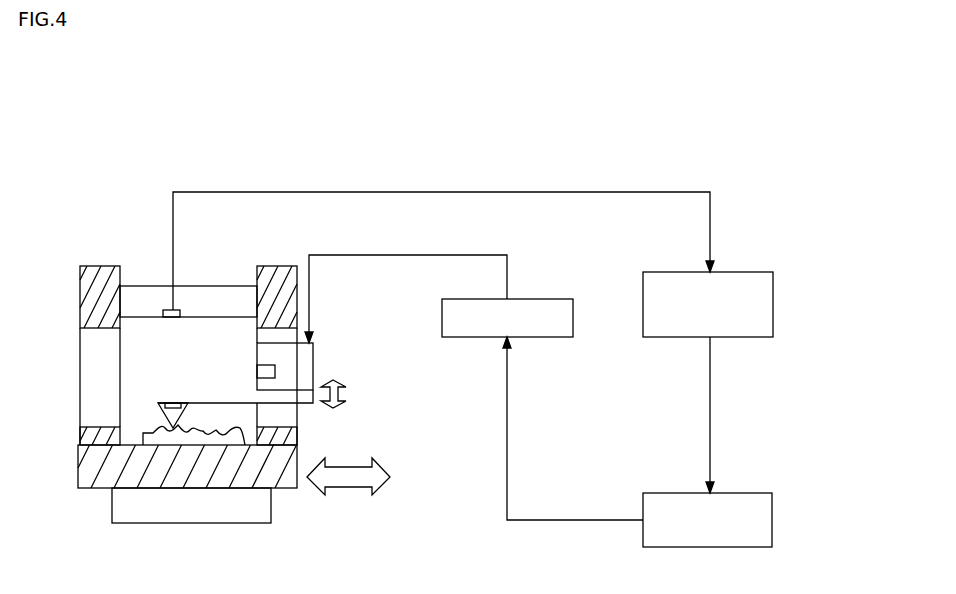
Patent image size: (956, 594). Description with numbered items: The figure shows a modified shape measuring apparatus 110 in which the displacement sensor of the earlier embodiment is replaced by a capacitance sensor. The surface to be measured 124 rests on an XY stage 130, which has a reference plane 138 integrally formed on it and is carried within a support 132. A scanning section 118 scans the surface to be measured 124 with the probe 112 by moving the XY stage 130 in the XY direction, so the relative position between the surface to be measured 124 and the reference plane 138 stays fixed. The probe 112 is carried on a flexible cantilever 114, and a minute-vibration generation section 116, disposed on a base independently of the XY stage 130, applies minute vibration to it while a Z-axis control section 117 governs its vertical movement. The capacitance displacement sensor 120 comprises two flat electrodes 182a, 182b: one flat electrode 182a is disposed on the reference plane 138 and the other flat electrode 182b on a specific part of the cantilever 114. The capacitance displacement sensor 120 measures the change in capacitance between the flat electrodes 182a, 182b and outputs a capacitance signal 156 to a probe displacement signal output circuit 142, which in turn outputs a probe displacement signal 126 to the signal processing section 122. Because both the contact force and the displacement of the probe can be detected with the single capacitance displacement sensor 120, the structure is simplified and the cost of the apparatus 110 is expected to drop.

The shape measuring apparatus 110 is at (627, 117).
The capacitance signal 156 is at (359, 192).
The support 132 is at (80, 341).
The capacitance displacement sensor 120 is at (156, 364).
The reference plane 138 is at (214, 295).
The flat electrode 182a is at (165, 310).
The minute-vibration generation section 116 is at (295, 385).
The flexible cantilever 114 is at (218, 403).
The probe 112 is at (165, 420).
The flat electrode 182b is at (174, 404).
The surface to be measured 124 is at (152, 434).
The XY stage 130 is at (80, 470).
The scanning section 118 is at (174, 525).
The Z-axis control section 117 is at (549, 299).
The probe displacement signal output circuit 142 is at (764, 272).
The probe displacement signal 126 is at (710, 412).
The signal processing section 122 is at (762, 493).